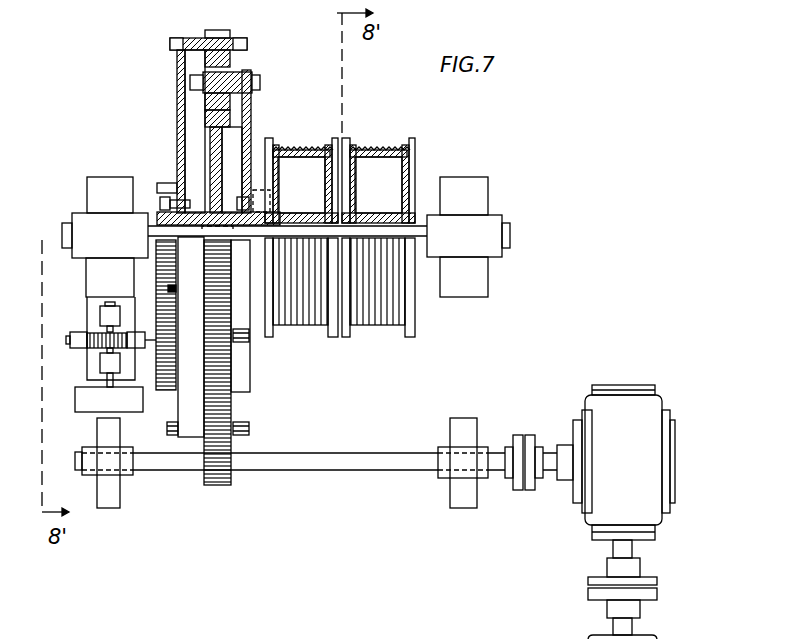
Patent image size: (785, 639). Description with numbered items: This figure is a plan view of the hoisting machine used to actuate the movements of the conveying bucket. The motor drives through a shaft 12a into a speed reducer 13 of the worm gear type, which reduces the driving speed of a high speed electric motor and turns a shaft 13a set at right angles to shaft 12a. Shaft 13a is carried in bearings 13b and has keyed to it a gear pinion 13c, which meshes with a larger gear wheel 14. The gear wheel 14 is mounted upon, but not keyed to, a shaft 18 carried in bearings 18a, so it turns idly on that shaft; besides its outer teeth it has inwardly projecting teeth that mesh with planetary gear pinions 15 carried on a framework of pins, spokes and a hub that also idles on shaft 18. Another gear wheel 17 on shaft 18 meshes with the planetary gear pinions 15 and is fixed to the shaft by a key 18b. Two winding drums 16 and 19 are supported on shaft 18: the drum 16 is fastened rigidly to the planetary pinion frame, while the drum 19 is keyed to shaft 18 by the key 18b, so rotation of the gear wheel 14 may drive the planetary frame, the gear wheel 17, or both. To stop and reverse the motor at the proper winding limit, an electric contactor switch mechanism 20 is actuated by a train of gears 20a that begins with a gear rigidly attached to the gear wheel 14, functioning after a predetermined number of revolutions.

The shaft 12a is at (632, 550).
The speed reducer 13 is at (624, 462).
The shaft 13a is at (378, 452).
The bearings 13b is at (112, 510).
The gear pinion 13c is at (215, 486).
The gear wheel 14 is at (217, 30).
The planetary gear pinions 15 is at (230, 67).
The winding drum 16 is at (291, 156).
The gear wheel 17 is at (232, 115).
The shaft 18 is at (62, 228).
The bearings 18a is at (287, 237).
The key 18b is at (228, 240).
The winding drum 19 is at (372, 152).
The electric contactor switch mechanism 20 is at (109, 355).
The train of gears 20a is at (160, 283).